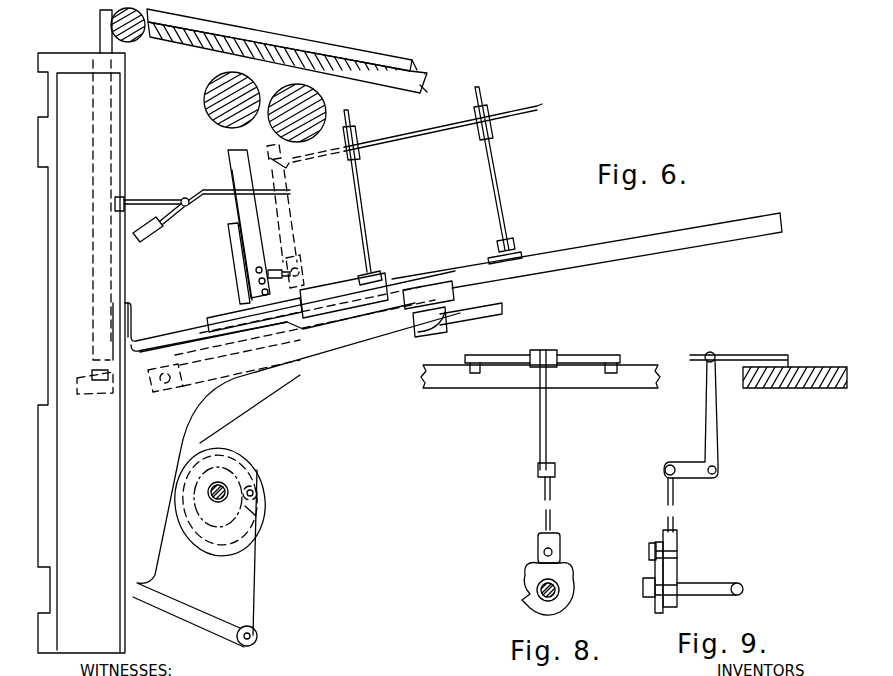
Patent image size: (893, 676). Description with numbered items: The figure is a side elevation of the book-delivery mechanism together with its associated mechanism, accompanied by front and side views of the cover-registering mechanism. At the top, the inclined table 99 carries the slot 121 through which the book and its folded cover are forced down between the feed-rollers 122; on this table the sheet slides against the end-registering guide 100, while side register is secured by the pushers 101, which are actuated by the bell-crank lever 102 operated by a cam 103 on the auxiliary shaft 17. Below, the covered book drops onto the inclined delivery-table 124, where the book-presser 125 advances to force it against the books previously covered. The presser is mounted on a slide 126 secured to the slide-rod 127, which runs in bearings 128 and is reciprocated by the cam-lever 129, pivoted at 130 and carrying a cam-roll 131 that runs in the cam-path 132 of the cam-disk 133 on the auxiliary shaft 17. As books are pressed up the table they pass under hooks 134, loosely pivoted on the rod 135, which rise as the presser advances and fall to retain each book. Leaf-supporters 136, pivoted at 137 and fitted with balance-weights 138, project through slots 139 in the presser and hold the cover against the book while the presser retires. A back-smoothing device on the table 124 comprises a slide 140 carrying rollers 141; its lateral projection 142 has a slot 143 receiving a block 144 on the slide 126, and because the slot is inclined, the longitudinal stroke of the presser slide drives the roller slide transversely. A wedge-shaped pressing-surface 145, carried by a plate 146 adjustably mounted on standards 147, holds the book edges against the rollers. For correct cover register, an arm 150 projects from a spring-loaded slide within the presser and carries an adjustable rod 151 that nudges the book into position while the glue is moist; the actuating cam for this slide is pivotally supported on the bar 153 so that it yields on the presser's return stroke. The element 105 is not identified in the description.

In FIG. 6, the auxiliary shaft 17 is at (223, 503).
In FIG. 8, the auxiliary shaft 17 is at (542, 588).
In FIG. 9, the auxiliary shaft 17 is at (723, 593).
In FIG. 6, the inclined table 99 is at (385, 98).
In FIG. 6, the end-registering guide 100 is at (415, 63).
In FIG. 9, the pushers 101 is at (749, 357).
In FIG. 8, the bell-crank lever 102 is at (546, 437).
In FIG. 9, the bell-crank lever 102 is at (715, 445).
In FIG. 8, the cam 103 is at (568, 592).
In FIG. 9, the cam 103 is at (657, 567).
In FIG. 6, the plate 105 is at (335, 49).
In FIG. 6, the slot 121 is at (313, 31).
In FIG. 6, the feed-rollers 122 is at (270, 122).
In FIG. 6, the inclined delivery-table 124 is at (540, 247).
In FIG. 6, the book-presser 125 is at (248, 244).
In FIG. 6, the slide 126 is at (181, 370).
In FIG. 6, the slide-rod 127 is at (503, 310).
In FIG. 6, the bearings 128 is at (432, 336).
In FIG. 6, the cam-lever 129 is at (207, 430).
In FIG. 6, the pivot 130 is at (257, 632).
In FIG. 6, the cam-roll 131 is at (258, 488).
In FIG. 6, the cam-path 132 is at (257, 513).
In FIG. 6, the cam-disk 133 is at (247, 467).
In FIG. 6, the hooks 134 is at (292, 173).
In FIG. 6, the rod 135 is at (373, 150).
In FIG. 6, the leaf-supporters 136 is at (204, 189).
In FIG. 6, the pivot 137 is at (181, 198).
In FIG. 6, the balance-weights 138 is at (152, 240).
In FIG. 6, the slots 139 is at (247, 208).
In FIG. 6, the slide 140 is at (377, 290).
In FIG. 6, the rollers 141 is at (326, 298).
In FIG. 6, the lateral projection 142 is at (200, 335).
In FIG. 6, the slot 143 is at (278, 320).
In FIG. 6, the block 144 is at (200, 330).
In FIG. 6, the wedge-shaped pressing-surface 145 is at (340, 158).
In FIG. 6, the plate 146 is at (402, 135).
In FIG. 6, the standards 147 is at (497, 173).
In FIG. 6, the arm 150 is at (150, 12).
In FIG. 6, the rod 151 is at (290, 262).
In FIG. 6, the bar 153 is at (145, 340).